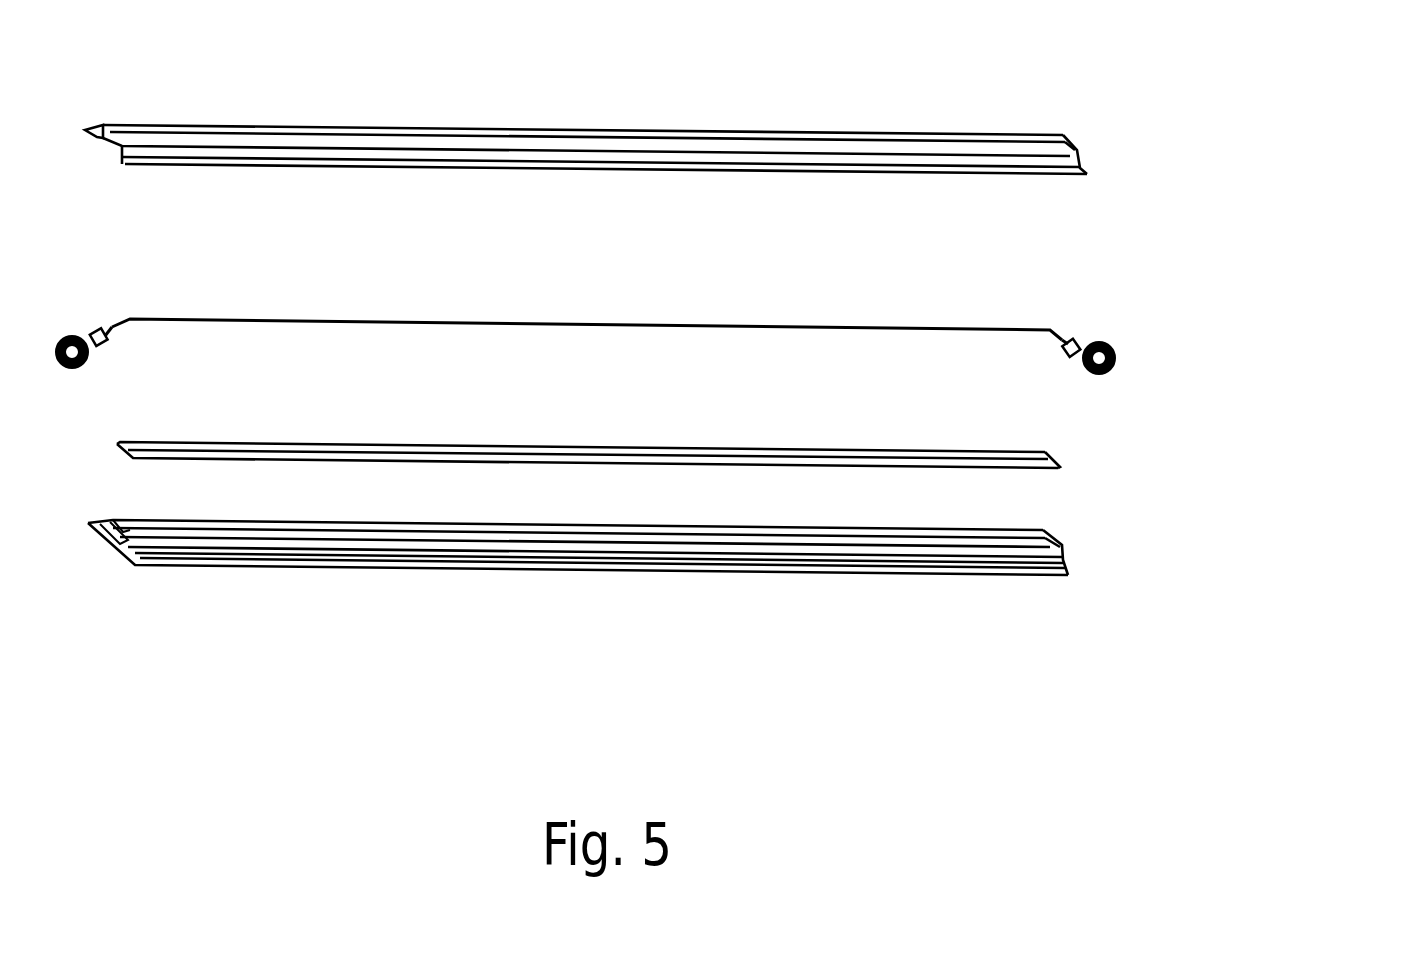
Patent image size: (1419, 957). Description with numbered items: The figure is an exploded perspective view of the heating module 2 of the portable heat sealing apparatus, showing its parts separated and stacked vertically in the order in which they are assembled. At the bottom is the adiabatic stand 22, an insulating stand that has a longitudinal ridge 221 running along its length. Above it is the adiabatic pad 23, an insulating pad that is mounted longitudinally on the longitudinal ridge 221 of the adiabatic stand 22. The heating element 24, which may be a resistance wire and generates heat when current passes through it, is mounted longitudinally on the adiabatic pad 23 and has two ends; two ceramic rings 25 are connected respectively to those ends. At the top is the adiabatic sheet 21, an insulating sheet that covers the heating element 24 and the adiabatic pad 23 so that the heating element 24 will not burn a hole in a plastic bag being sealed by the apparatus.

The heating module 2 is at (1288, 184).
The adiabatic sheet 21 is at (1075, 149).
The adiabatic stand 22 is at (672, 613).
The longitudinal ridge 221 is at (153, 563).
The adiabatic pad 23 is at (1060, 467).
The heating element 24 is at (833, 328).
The ceramic rings 25 is at (1115, 345).